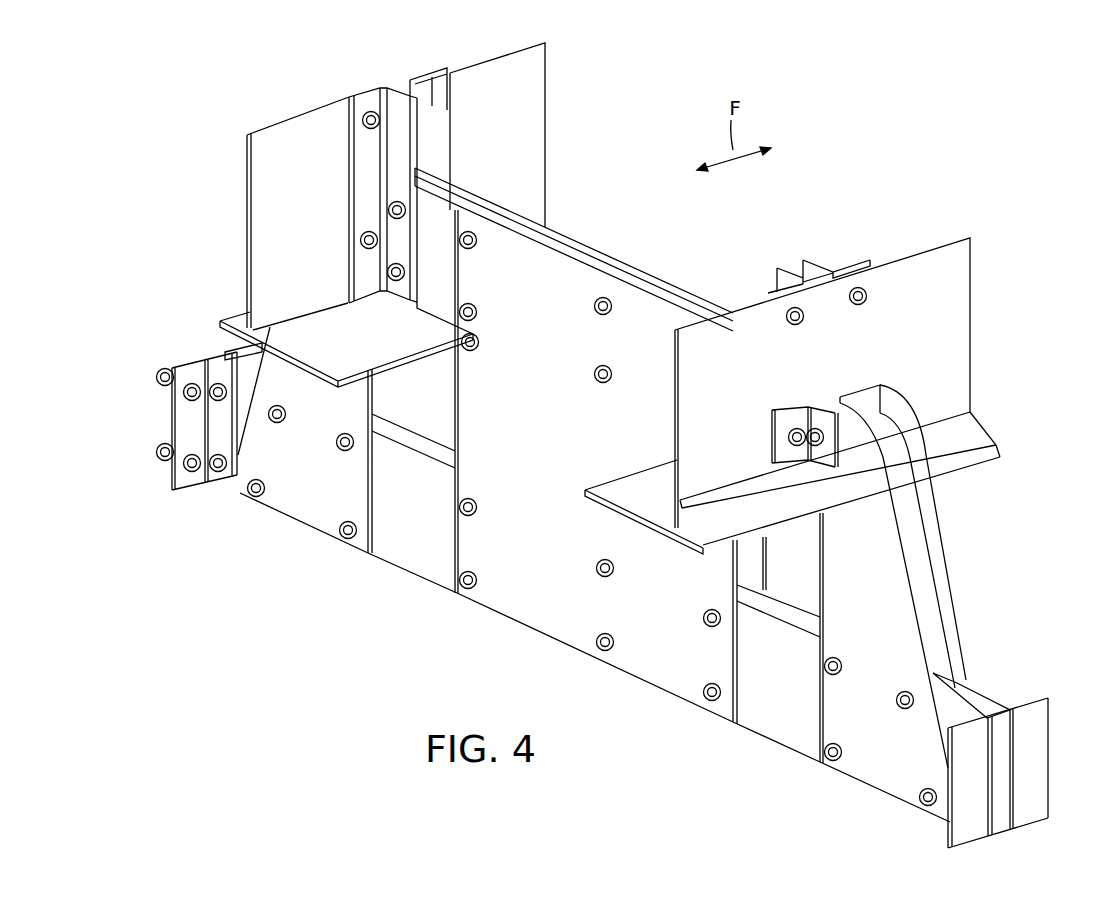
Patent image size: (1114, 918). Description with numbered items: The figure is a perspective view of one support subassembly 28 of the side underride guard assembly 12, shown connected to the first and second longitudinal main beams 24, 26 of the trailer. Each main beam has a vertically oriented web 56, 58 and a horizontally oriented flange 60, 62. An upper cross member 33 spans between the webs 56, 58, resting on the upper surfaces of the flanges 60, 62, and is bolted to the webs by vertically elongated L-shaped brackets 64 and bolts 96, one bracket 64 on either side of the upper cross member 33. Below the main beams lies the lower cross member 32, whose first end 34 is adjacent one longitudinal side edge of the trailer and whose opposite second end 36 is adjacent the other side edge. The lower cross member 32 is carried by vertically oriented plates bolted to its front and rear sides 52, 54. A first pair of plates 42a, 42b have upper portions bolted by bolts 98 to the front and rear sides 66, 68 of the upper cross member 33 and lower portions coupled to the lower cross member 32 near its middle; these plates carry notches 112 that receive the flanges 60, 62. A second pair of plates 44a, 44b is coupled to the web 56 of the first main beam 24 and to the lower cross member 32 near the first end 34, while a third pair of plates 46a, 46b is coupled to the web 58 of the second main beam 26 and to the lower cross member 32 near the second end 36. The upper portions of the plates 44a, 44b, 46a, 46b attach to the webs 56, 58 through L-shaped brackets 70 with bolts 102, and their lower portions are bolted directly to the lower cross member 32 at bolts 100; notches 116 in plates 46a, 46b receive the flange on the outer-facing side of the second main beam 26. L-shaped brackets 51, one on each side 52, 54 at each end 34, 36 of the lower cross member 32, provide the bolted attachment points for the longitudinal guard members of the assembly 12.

The side underride guard assembly 12 is at (1012, 318).
The first longitudinal main beam 24 is at (523, 113).
The second longitudinal main beam 26 is at (955, 363).
The support subassembly 28 is at (1002, 636).
The lower cross member 32 is at (775, 712).
The upper cross member 33 is at (433, 232).
The first end 34 is at (208, 492).
The second end 36 is at (930, 826).
The vertically oriented plate 42a is at (537, 602).
The vertically oriented plate 42b is at (627, 263).
The vertically oriented plate 44a is at (298, 502).
The vertically oriented plate 44b is at (411, 461).
The vertically oriented plate 46a is at (890, 765).
The vertically oriented plate 46b is at (933, 548).
The L-shaped bracket 51 is at (222, 343).
The front side 52 is at (417, 542).
The rear side 54 is at (778, 596).
The web 56 is at (290, 233).
The web 58 is at (708, 397).
The flange 60 is at (346, 347).
The flange 62 is at (634, 501).
The L-shaped bracket 64 is at (430, 70).
The front side 66 is at (440, 287).
The rear side 68 is at (478, 192).
The L-shaped bracket 70 is at (792, 412).
The bolt 96 is at (380, 130).
The bolt 98 is at (603, 373).
The bolt 100 is at (343, 440).
The bolt 102 is at (795, 437).
The notch 112 is at (477, 340).
The notch 116 is at (837, 512).